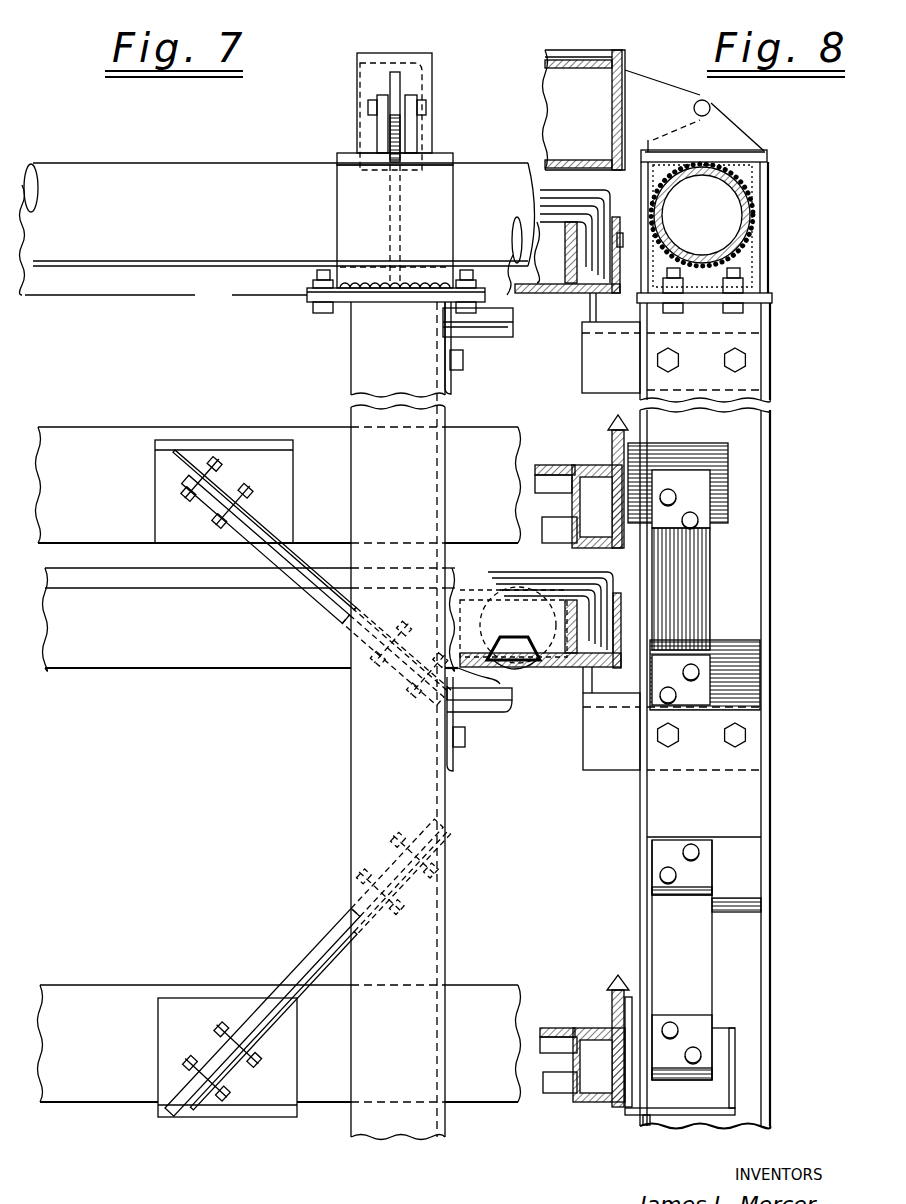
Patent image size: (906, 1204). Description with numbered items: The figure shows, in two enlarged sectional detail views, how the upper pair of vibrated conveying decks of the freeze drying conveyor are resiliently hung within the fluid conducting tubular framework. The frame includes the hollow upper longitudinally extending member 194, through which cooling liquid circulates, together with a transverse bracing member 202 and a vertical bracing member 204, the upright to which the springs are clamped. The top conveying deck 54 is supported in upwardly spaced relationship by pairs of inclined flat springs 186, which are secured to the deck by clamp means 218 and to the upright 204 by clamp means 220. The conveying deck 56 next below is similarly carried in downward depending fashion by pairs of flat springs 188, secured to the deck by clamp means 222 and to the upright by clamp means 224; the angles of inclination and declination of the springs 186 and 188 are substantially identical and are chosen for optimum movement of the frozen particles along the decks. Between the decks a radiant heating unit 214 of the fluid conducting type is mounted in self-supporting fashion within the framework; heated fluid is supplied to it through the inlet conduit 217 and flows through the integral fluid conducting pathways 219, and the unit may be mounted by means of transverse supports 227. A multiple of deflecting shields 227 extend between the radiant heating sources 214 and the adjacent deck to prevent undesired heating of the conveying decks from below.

In FIG. 7, the upper conveying deck 54 is at (139, 436).
In FIG. 7, the conveying deck 56 is at (123, 986).
In FIG. 7, the flat springs 186 is at (300, 616).
In FIG. 8, the flat springs 186 is at (667, 613).
In FIG. 7, the flat springs 188 is at (315, 943).
In FIG. 8, the flat springs 188 is at (696, 953).
In FIG. 7, the upper longitudinally extending member 194 is at (250, 243).
In FIG. 8, the upper longitudinally extending member 194 is at (737, 250).
In FIG. 7, the transverse bracing member 202 is at (432, 93).
In FIG. 8, the transverse bracing member 202 is at (572, 112).
In FIG. 7, the vertical bracing member 204 is at (427, 797).
In FIG. 8, the vertical bracing member 204 is at (770, 440).
In FIG. 7, the radiant heating unit 214 is at (182, 670).
In FIG. 7, the inlet conduit 217 is at (513, 667).
In FIG. 7, the clamp means 218 is at (203, 505).
In FIG. 8, the clamp means 218 is at (702, 500).
In FIG. 7, the fluid conducting pathways 219 is at (510, 636).
In FIG. 8, the fluid conducting pathways 219 is at (557, 294).
In FIG. 7, the clamp means 220 is at (378, 700).
In FIG. 8, the clamp means 220 is at (655, 685).
In FIG. 7, the clamp means 222 is at (235, 1095).
In FIG. 8, the clamp means 222 is at (700, 1030).
In FIG. 7, the clamp means 224 is at (440, 905).
In FIG. 8, the clamp means 224 is at (667, 858).
In FIG. 7, the deflecting shields 227 is at (534, 578).
In FIG. 8, the deflecting shields 227 is at (595, 186).